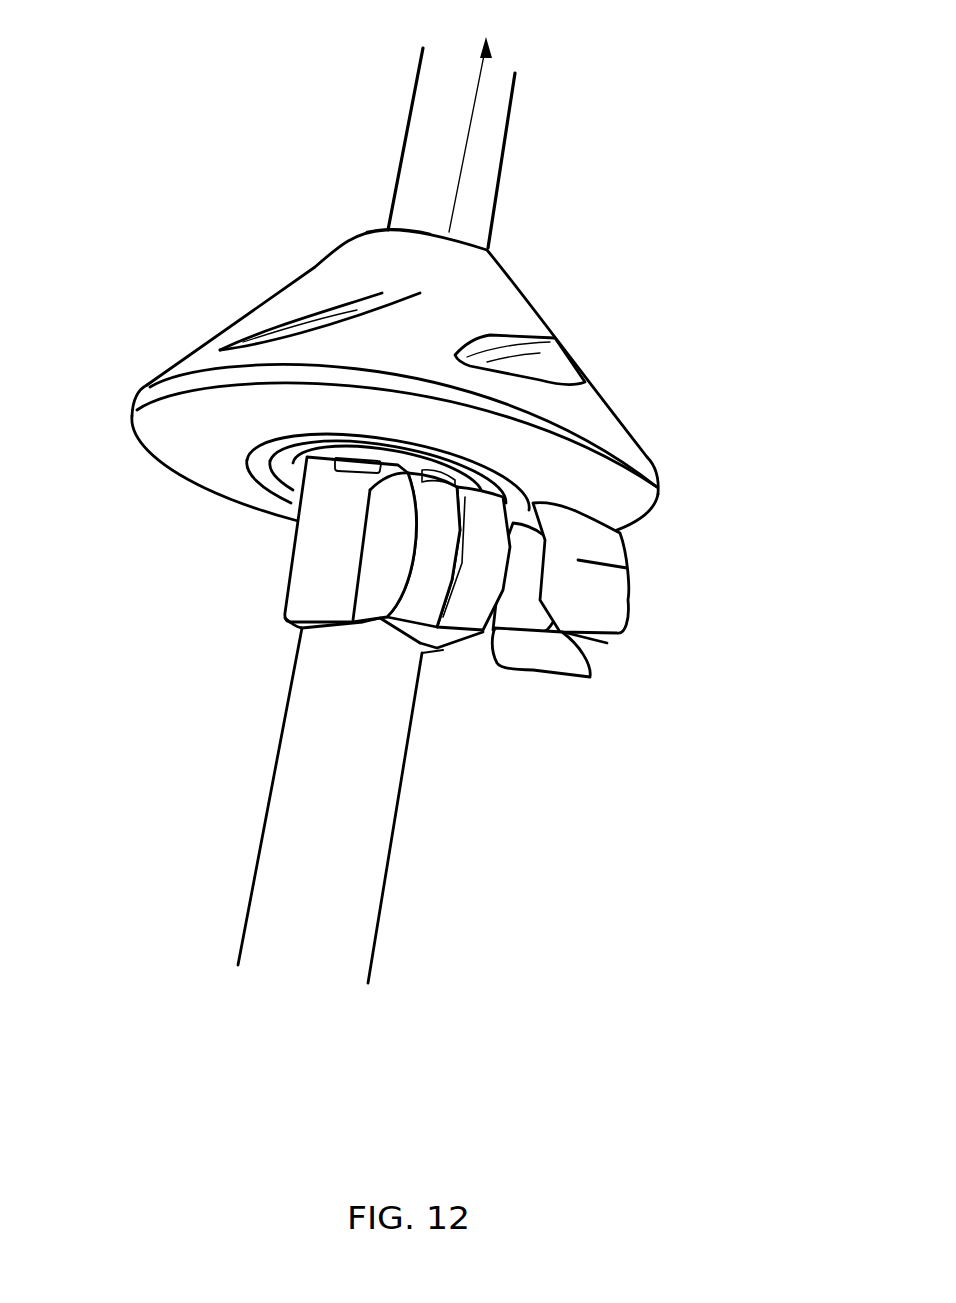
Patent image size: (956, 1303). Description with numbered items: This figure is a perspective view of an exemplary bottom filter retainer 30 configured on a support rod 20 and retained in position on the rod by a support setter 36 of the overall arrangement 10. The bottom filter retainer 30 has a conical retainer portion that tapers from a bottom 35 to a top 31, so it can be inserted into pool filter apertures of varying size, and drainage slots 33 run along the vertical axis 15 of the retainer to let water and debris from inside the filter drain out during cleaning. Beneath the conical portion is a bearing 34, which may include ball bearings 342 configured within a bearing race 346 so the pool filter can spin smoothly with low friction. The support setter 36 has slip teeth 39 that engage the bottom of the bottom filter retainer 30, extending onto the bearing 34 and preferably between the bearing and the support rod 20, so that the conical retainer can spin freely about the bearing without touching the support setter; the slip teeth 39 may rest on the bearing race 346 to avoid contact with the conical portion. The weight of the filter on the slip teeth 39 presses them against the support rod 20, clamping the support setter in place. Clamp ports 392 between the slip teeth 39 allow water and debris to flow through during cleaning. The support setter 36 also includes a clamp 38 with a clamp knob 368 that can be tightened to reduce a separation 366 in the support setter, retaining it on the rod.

The surgical instrument assembly 10 is at (221, 194).
The vertical axis 15 is at (477, 75).
The support rod 20 is at (480, 170).
The bottom filter retainer 30 is at (505, 300).
The top 31 is at (500, 260).
The drainage slots 33 is at (547, 358).
The bearing 34 is at (207, 493).
The ball bearings 342 is at (295, 480).
The bearing race 346 is at (270, 457).
The bottom 35 is at (635, 498).
The support setter 36 is at (407, 597).
The separation 366 is at (443, 653).
The clamp 38 is at (602, 603).
The clamp knob 368 is at (590, 652).
The slip teeth 39 is at (407, 473).
The clamp ports 392 is at (353, 463).